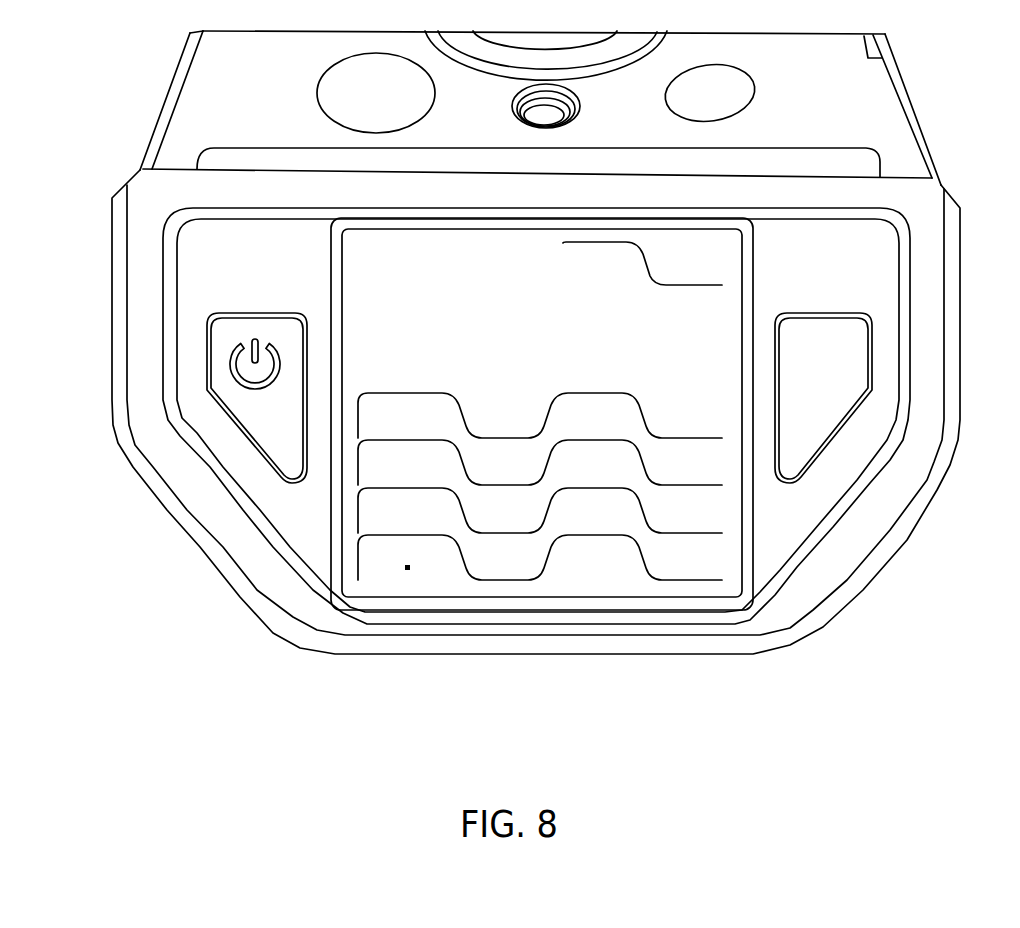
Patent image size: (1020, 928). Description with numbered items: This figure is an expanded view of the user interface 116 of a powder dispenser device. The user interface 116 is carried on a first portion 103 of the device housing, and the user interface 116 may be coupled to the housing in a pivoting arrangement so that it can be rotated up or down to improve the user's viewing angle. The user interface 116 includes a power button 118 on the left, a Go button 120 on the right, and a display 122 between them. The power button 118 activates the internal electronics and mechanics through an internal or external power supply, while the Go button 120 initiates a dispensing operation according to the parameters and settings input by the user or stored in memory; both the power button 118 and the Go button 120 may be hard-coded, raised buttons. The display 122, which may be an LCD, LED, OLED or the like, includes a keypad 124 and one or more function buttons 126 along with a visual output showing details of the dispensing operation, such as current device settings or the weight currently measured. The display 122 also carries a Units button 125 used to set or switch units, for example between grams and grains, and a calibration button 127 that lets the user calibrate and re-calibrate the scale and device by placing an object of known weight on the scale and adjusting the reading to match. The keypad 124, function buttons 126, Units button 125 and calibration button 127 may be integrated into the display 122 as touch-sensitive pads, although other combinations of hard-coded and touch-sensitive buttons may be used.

The first portion 103 is at (68, 310).
The user interface 116 is at (115, 186).
The power button 118 is at (234, 313).
The Go button 120 is at (814, 315).
The display 122 is at (346, 252).
The keypad 124 is at (390, 392).
The Units button 125 is at (594, 291).
The function buttons 126 is at (681, 392).
The calibration button 127 is at (679, 303).